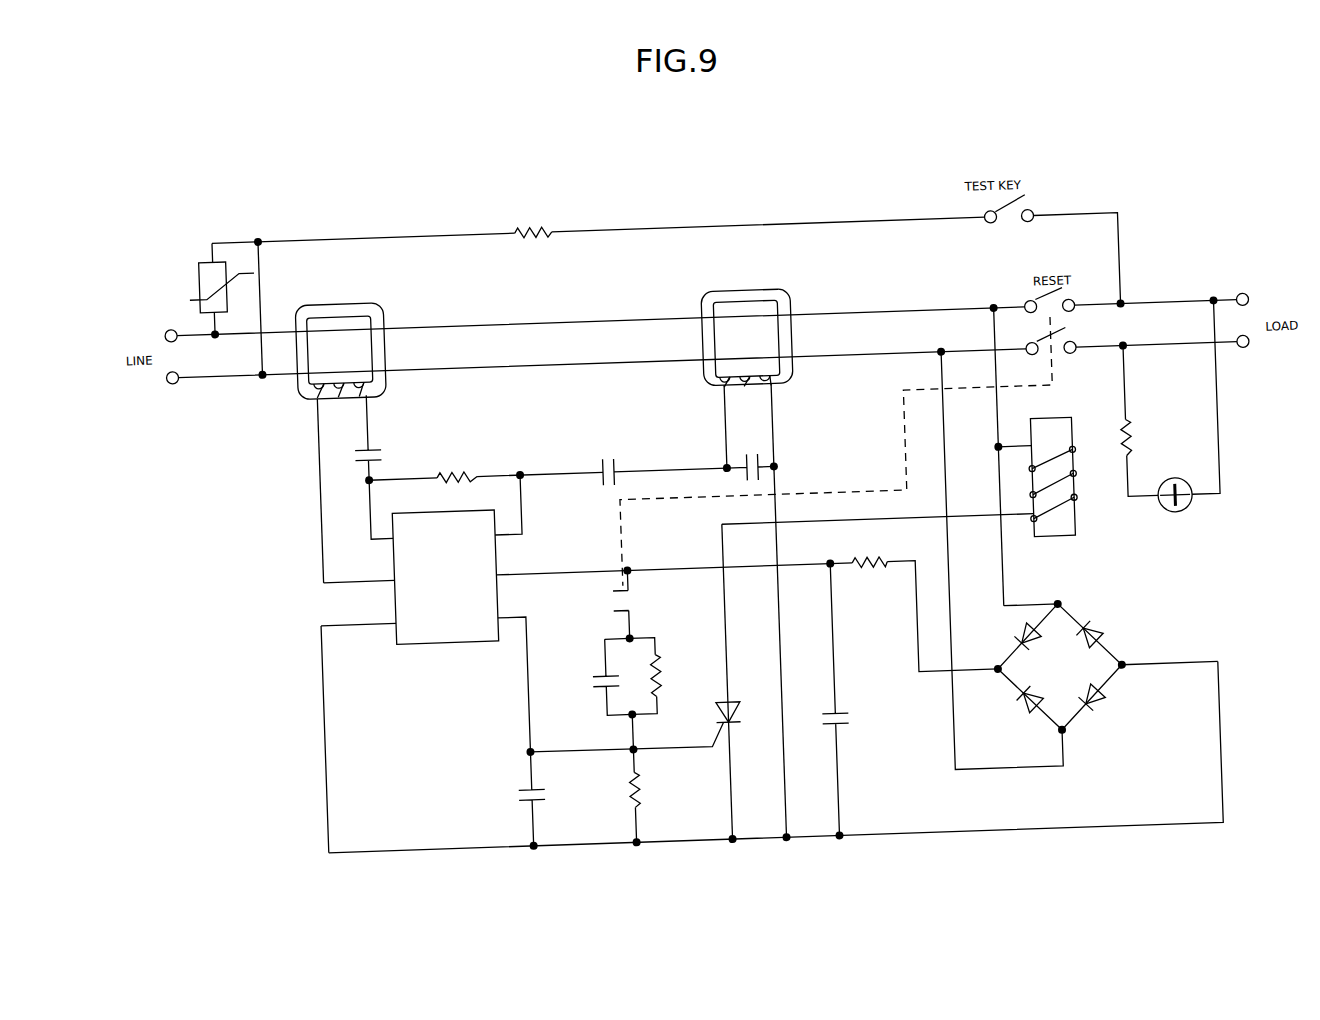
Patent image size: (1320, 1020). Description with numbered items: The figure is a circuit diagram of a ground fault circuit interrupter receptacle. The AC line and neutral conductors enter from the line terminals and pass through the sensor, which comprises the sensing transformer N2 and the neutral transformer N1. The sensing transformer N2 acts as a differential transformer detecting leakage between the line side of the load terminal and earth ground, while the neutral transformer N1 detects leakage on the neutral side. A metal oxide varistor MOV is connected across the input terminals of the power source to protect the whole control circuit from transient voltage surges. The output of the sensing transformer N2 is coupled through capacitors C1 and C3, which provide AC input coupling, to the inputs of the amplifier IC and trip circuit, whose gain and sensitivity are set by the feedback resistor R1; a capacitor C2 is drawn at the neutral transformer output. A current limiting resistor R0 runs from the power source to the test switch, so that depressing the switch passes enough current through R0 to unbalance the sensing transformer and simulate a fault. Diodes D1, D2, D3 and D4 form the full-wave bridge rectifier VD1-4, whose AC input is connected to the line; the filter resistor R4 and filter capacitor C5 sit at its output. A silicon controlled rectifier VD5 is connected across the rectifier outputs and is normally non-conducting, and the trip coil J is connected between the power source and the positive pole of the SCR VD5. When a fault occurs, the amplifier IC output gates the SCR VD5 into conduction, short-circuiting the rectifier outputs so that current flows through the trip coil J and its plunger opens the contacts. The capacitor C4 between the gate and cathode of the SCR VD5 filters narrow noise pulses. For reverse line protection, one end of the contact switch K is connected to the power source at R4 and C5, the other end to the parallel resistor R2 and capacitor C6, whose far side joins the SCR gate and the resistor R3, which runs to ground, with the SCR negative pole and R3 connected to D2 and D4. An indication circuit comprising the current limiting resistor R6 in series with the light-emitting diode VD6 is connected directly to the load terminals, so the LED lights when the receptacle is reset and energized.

The current limiting resistor R0 is at (621, 217).
The metal oxide varistor MOV is at (209, 289).
The sensing transformer N2 is at (340, 340).
The neutral transformer N1 is at (743, 325).
The capacitor C1 is at (353, 438).
The feedback resistor R1 is at (485, 465).
The capacitor C3 is at (664, 467).
The capacitor C2 is at (750, 457).
The amplifier IC and trip circuit IC is at (445, 577).
The contact switch K is at (604, 606).
The capacitor C6 is at (600, 677).
The resistor R2 is at (658, 676).
The silicon controlled rectifier VD5 is at (743, 681).
The resistor R3 is at (646, 795).
The capacitor C4 is at (545, 799).
The filter capacitor C5 is at (849, 699).
The filter resistor R4 is at (914, 614).
The trip coil J is at (1047, 477).
The current limiting resistor R6 is at (1138, 420).
The light-emitting diode VD6 is at (1187, 420).
The full-wave bridge rectifier VD1-4 is at (1103, 666).
The diode D1 is at (1013, 636).
The diode D2 is at (1100, 632).
The diode D3 is at (1023, 708).
The diode D4 is at (1102, 702).